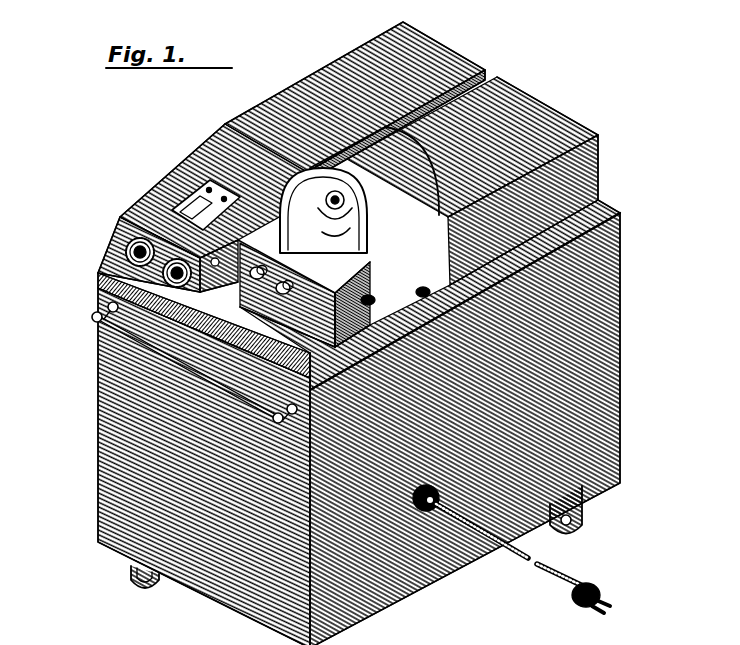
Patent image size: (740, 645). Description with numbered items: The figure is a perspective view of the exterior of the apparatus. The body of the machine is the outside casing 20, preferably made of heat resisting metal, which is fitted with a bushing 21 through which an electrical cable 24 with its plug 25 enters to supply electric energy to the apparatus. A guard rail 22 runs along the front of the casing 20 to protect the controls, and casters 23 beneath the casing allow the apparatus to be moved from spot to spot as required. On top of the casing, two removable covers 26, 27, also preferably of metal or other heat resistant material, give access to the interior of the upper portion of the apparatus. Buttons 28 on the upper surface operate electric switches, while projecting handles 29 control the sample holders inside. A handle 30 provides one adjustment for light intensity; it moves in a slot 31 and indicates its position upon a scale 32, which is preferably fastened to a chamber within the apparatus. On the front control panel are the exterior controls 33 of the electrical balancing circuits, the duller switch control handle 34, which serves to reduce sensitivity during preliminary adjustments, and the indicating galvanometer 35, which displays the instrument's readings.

The outside casing 20 is at (603, 358).
The bushing 21 is at (438, 492).
The guard rail 22 is at (134, 337).
The casters 23 is at (133, 583).
The electrical cable 24 is at (552, 580).
The plug 25 is at (603, 590).
The removable cover 26 is at (426, 50).
The removable cover 27 is at (556, 126).
The buttons 28 is at (372, 306).
The projecting handles 29 is at (245, 240).
The handle 30 is at (298, 182).
The slot 31 is at (338, 192).
The scale 32 is at (258, 262).
The exterior controls 33 is at (112, 258).
The duller switch control handle 34 is at (140, 215).
The indicating galvanometer 35 is at (188, 185).